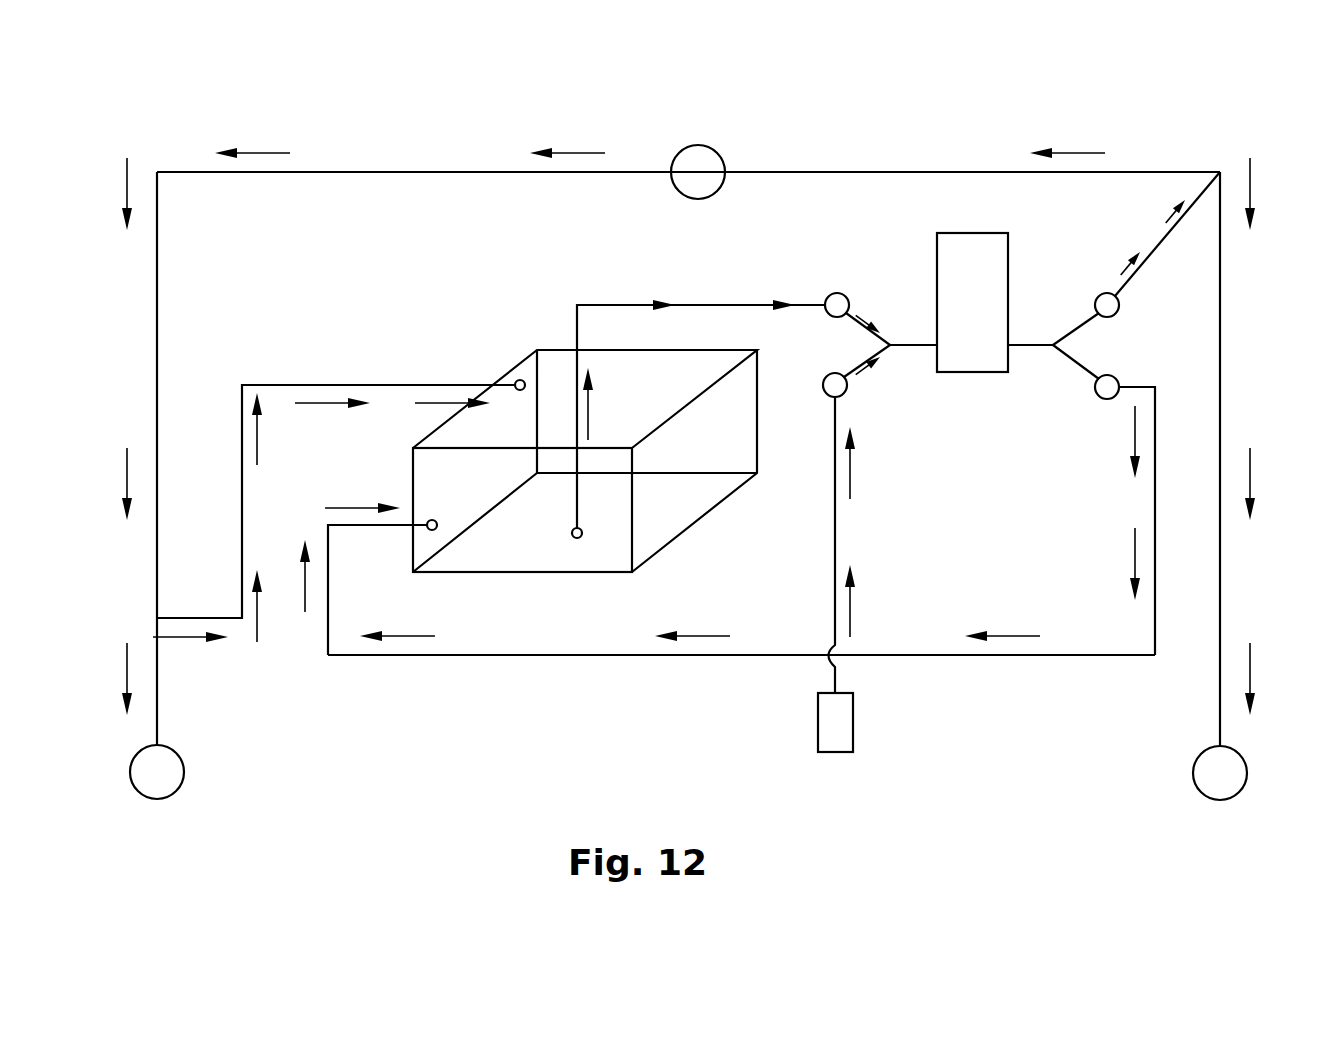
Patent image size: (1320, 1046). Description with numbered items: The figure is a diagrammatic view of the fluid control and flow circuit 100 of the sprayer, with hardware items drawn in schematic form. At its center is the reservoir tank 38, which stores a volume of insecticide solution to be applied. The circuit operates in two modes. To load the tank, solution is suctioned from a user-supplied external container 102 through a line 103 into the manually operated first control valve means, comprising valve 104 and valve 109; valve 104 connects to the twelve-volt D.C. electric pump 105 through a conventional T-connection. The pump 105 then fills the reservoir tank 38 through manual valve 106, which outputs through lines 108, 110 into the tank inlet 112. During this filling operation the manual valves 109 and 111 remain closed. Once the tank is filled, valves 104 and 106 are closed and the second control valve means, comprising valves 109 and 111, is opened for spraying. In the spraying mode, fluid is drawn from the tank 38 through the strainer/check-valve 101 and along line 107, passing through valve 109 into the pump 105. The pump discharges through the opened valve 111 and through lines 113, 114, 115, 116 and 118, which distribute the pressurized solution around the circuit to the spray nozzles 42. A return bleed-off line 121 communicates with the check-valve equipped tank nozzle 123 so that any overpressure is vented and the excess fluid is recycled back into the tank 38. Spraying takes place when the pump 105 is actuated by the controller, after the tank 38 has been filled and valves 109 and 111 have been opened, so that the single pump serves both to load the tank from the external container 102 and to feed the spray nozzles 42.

The fluid control and flow circuit 100 is at (436, 128).
The spray nozzles 42 is at (710, 157).
The line 114 is at (905, 172).
The line 115 is at (157, 345).
The line 116 is at (157, 687).
The line 118 is at (1220, 398).
The return bleed-off line 121 is at (390, 385).
The tank nozzle 123 is at (520, 380).
The tank inlet 112 is at (445, 440).
The line 110 is at (563, 655).
The reservoir tank 38 is at (677, 520).
The strainer/check-valve 101 is at (570, 535).
The line 107 is at (700, 305).
The valve 109 is at (833, 294).
The valve 104 is at (846, 395).
The pump 105 is at (995, 272).
The valve 111 is at (1112, 310).
The line 113 is at (1153, 243).
The valve 106 is at (1112, 375).
The line 108 is at (1155, 500).
The line 103 is at (838, 530).
The external container 102 is at (848, 735).